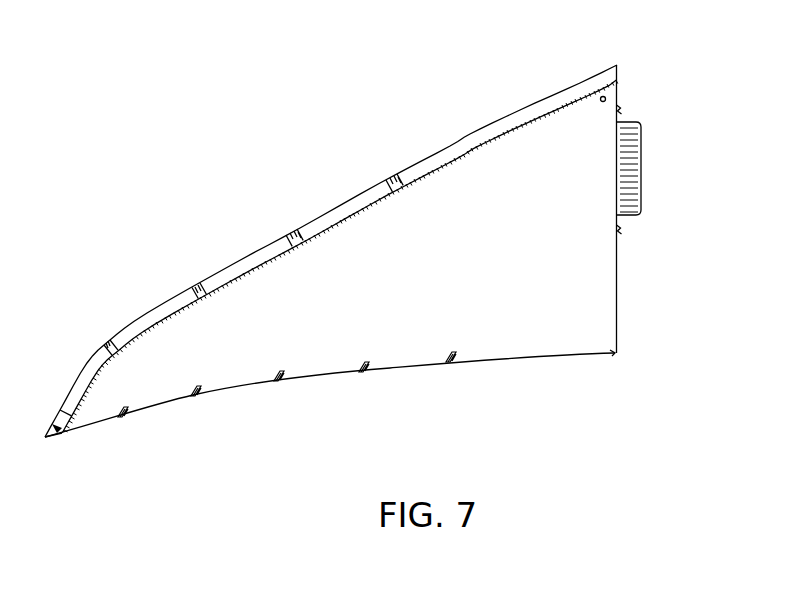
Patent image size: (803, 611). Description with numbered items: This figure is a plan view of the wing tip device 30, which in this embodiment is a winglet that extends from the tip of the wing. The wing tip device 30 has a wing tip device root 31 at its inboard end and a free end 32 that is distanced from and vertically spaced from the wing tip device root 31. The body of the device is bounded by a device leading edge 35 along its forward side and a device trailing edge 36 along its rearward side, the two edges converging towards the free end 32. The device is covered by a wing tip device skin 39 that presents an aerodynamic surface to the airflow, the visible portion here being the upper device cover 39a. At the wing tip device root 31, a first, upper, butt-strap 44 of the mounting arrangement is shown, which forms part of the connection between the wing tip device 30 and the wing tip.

The wing tip device 30 is at (369, 247).
The wing tip device root 31 is at (613, 356).
The free end 32 is at (90, 408).
The device leading edge 35 is at (440, 152).
The device trailing edge 36 is at (297, 380).
The wing tip device skin 39 is at (234, 355).
The upper device cover 39a is at (485, 332).
The first, upper, butt-strap 44 is at (638, 154).